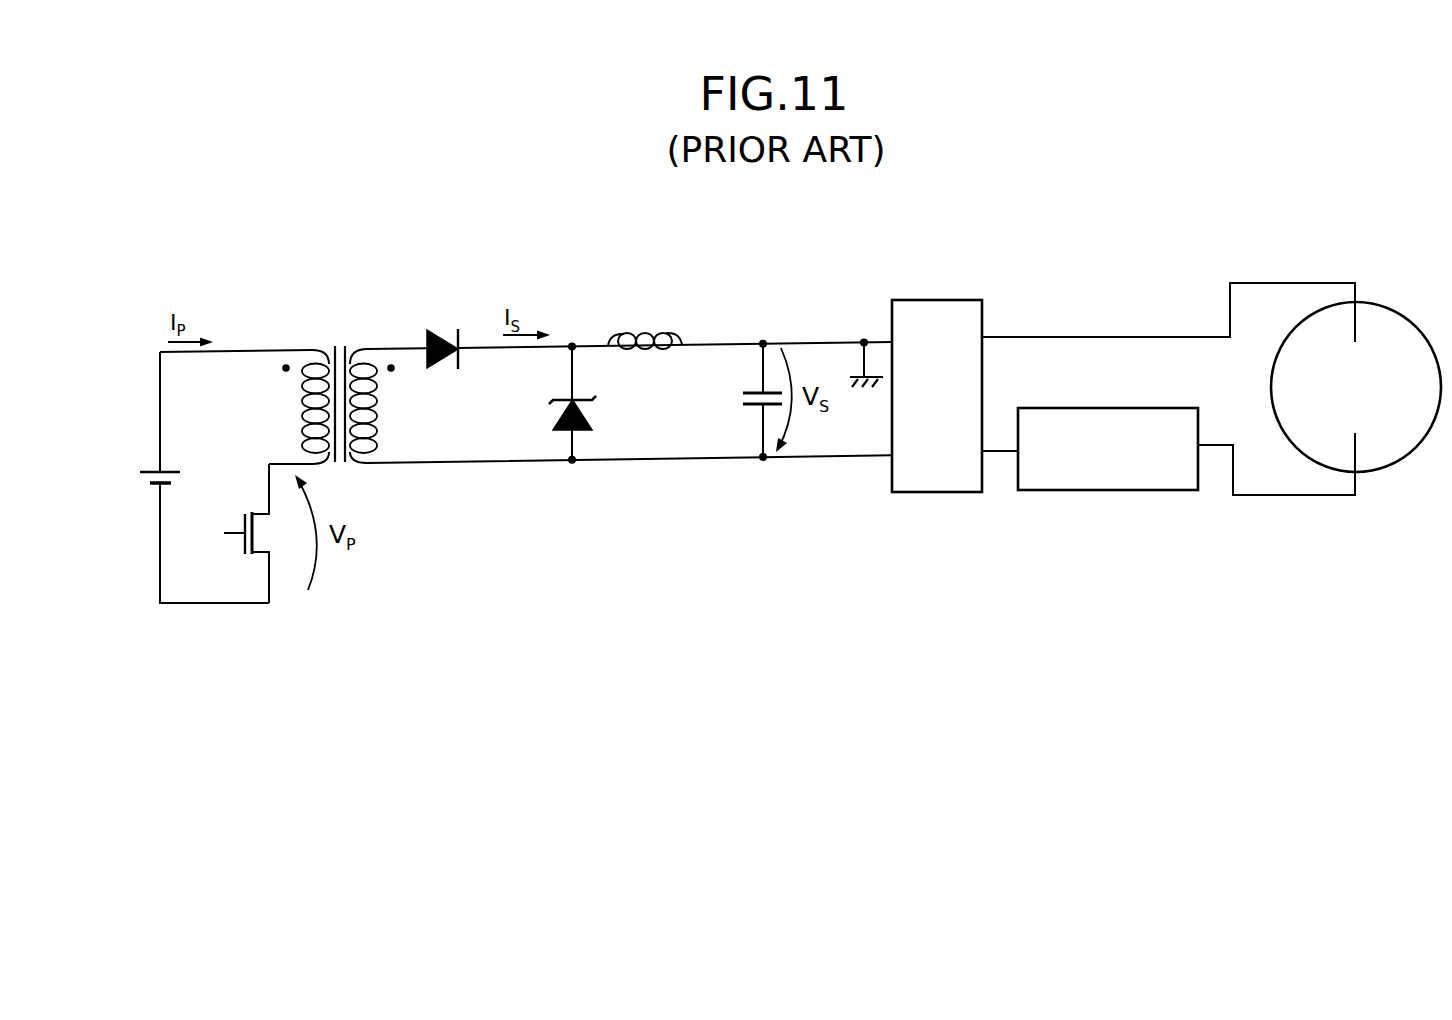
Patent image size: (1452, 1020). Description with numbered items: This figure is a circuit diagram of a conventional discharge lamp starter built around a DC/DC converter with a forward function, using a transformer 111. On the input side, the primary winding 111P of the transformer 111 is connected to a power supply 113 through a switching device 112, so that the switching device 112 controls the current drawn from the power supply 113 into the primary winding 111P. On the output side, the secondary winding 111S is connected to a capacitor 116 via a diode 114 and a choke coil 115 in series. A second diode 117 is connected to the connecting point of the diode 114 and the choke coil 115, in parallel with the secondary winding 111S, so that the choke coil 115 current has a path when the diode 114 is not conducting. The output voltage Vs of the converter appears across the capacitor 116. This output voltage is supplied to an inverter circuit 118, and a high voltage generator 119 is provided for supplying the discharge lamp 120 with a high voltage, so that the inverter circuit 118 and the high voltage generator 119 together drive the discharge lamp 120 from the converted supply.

The transformer 111 is at (338, 352).
The primary winding 111P is at (304, 363).
The secondary winding 111S is at (363, 363).
The switching device 112 is at (235, 554).
The power supply 113 is at (147, 466).
The diode 114 is at (441, 334).
The choke coil 115 is at (645, 334).
The capacitor 116 is at (744, 403).
The diode 117 is at (593, 417).
The inverter circuit 118 is at (936, 300).
The high voltage generator 119 is at (1110, 494).
The discharge lamp 120 is at (1420, 328).